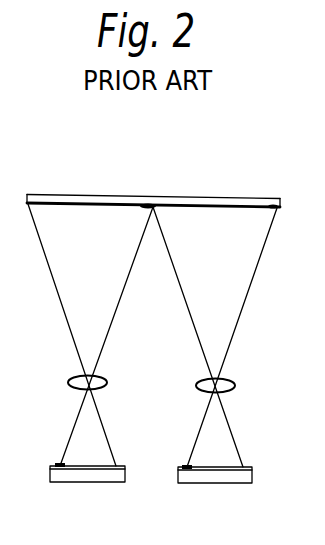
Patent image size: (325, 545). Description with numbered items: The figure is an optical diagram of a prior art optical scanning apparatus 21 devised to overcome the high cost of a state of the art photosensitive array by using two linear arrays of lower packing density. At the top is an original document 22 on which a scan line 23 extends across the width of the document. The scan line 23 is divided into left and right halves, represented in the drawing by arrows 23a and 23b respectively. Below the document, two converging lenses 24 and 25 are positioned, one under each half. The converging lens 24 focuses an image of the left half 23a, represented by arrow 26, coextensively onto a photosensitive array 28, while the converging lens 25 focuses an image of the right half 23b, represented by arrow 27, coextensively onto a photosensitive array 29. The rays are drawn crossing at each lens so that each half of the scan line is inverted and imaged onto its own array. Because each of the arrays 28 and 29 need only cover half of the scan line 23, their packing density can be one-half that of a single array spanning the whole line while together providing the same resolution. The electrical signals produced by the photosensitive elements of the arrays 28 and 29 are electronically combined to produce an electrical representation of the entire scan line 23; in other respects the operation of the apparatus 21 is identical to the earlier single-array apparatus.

The optical scanning apparatus 21 is at (123, 162).
The original document 22 is at (250, 201).
The scan line 23 is at (180, 231).
The left half of scan line 23a is at (82, 206).
The right half of scan line 23b is at (222, 208).
The converging lens 24 is at (68, 382).
The converging lens 25 is at (235, 386).
The image of left half 26 is at (82, 465).
The image of right half 27 is at (222, 467).
The photosensitive array 28 is at (112, 483).
The photosensitive array 29 is at (218, 484).